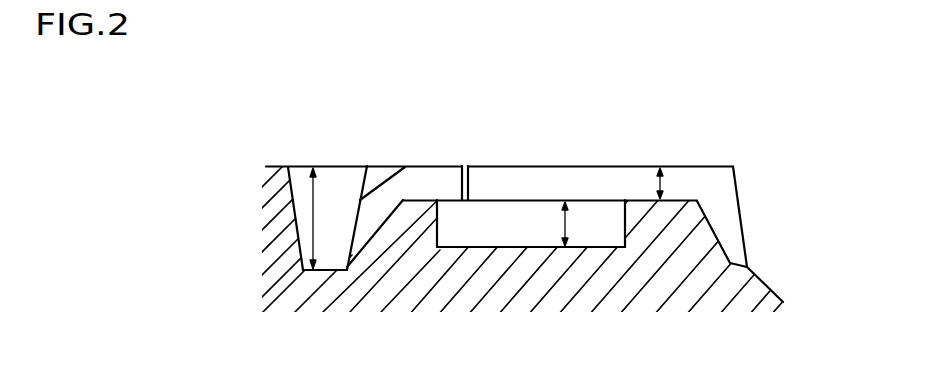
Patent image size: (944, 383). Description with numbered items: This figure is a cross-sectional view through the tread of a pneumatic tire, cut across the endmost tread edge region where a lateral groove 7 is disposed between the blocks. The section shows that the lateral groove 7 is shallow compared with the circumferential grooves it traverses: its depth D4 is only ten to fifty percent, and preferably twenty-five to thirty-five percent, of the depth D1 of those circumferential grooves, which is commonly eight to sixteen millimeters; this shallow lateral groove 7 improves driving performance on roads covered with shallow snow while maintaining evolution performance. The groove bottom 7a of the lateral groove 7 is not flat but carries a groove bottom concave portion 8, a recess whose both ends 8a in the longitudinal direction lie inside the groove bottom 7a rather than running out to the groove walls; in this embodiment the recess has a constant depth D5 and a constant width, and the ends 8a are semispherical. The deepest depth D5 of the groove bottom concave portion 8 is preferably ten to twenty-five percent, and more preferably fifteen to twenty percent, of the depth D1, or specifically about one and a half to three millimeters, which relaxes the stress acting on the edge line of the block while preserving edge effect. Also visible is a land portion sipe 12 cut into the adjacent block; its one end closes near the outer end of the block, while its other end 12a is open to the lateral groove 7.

The lateral groove 7 is at (692, 185).
The groove bottom 7a is at (413, 198).
The groove bottom concave portion 8 is at (533, 222).
The ends of groove bottom concave portion 8a is at (449, 207).
The land portion sipe 12 is at (467, 158).
The other end of land portion sipe 12a is at (470, 183).
The depth of circumferential grooves D1 is at (318, 234).
The depth of lateral groove D4 is at (672, 185).
The deepest depth of groove bottom concave portion D5 is at (565, 226).